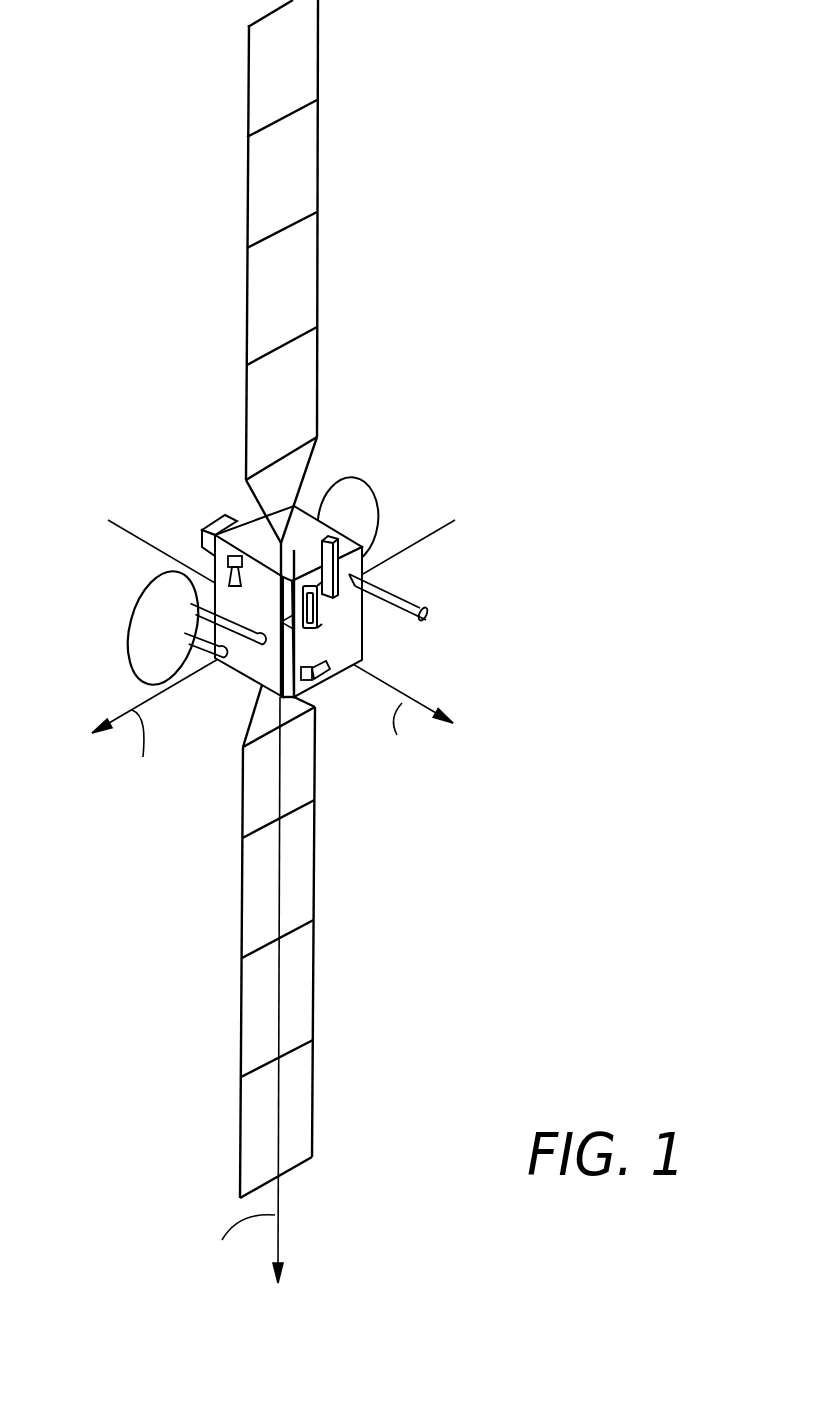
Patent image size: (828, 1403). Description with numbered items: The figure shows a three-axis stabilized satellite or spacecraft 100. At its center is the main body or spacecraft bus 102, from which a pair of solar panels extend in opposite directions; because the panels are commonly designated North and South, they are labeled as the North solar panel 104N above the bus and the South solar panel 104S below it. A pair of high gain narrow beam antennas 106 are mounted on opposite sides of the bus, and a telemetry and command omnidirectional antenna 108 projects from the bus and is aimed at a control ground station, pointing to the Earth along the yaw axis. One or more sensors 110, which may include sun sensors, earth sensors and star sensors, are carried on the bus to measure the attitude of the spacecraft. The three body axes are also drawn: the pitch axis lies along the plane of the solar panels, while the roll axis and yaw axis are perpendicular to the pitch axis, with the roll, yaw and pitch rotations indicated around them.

The spacecraft 100 is at (289, 662).
The spacecraft bus 102 is at (363, 558).
The North solar panel 104N is at (297, 168).
The South solar panel 104S is at (305, 990).
The high gain narrow beam antennas 106 is at (362, 487).
The telemetry and command omnidirectional antenna 108 is at (410, 600).
The sensors 110 is at (238, 556).